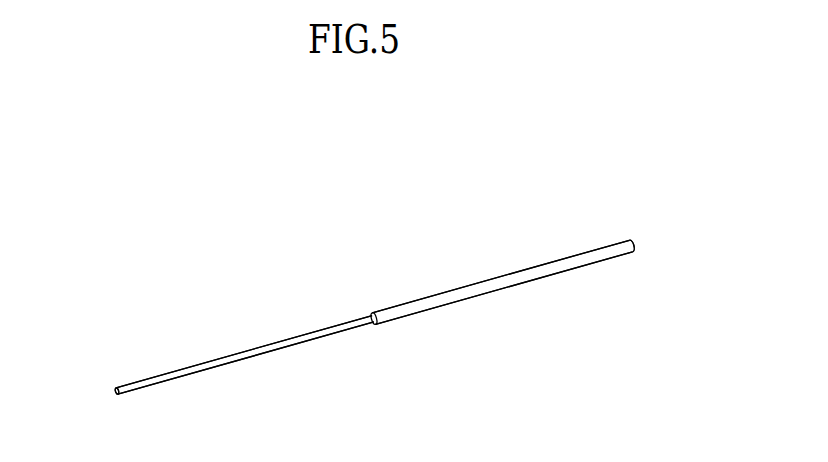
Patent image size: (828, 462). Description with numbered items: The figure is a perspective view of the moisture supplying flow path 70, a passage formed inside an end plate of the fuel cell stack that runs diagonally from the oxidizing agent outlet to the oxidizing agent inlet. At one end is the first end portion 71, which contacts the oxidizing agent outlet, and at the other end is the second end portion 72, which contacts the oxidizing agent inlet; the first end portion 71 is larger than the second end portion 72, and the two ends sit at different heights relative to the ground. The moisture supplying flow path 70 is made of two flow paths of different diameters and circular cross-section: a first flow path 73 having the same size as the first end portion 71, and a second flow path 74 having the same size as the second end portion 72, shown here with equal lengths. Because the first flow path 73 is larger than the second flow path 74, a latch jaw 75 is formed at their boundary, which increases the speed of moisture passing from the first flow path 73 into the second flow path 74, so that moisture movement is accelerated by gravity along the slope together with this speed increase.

The moisture supplying flow path 70 is at (421, 276).
The first end portion 71 is at (636, 243).
The second end portion 72 is at (115, 397).
The first flow path 73 is at (502, 287).
The second flow path 74 is at (237, 354).
The latch jaw 75 is at (367, 315).